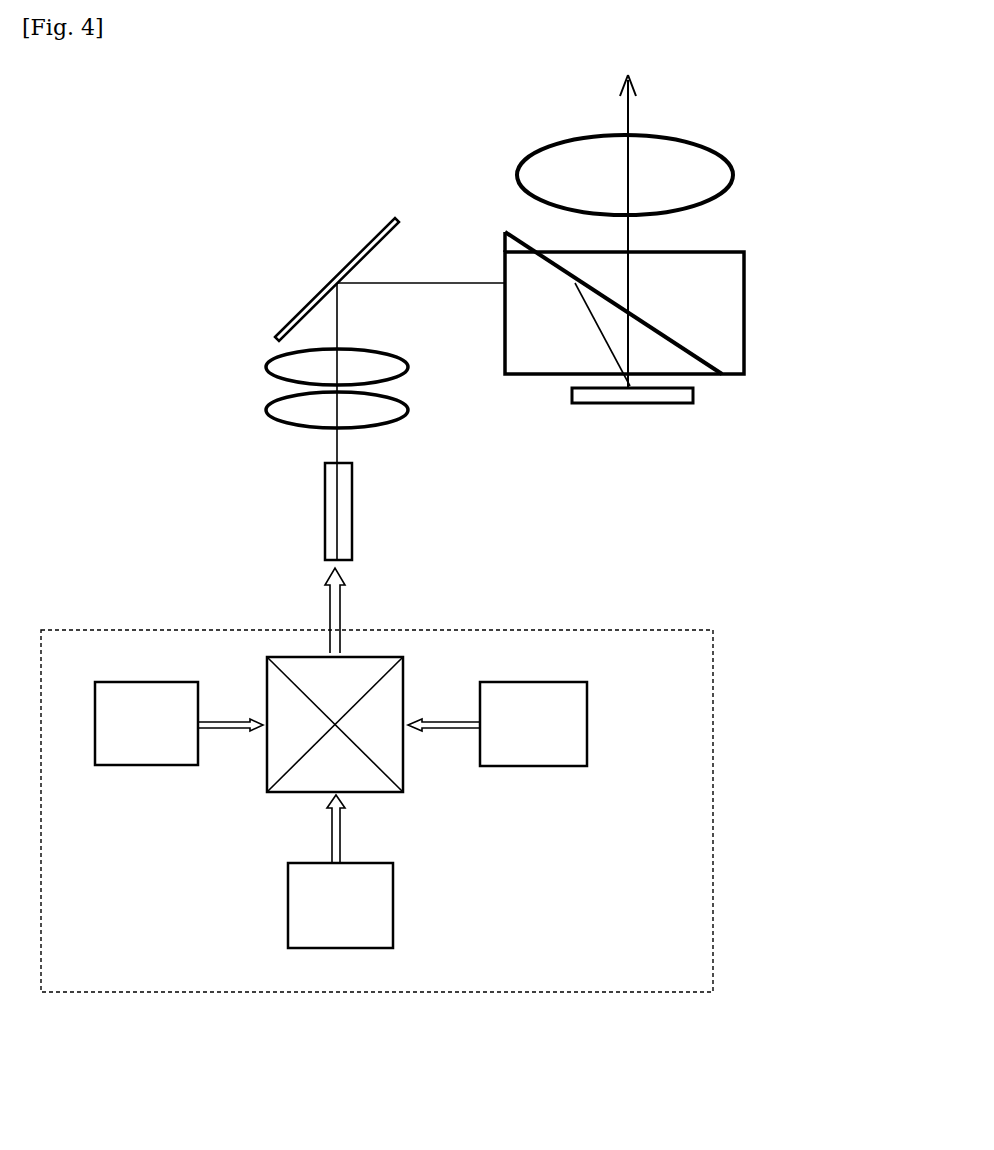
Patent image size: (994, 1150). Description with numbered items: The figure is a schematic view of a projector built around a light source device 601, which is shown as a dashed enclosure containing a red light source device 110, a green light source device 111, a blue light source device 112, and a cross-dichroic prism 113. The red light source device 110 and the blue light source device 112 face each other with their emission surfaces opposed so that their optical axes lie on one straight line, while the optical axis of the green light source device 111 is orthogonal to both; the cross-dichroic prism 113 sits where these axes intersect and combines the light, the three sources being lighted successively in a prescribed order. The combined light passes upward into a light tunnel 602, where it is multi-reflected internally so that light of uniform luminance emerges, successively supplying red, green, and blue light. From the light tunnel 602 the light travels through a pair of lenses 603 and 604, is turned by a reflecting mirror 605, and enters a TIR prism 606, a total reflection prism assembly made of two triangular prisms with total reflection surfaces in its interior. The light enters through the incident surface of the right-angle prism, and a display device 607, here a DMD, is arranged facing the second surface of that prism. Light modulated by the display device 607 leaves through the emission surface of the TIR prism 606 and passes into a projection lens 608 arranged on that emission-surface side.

The red light source device 110 is at (113, 745).
The green light source device 111 is at (393, 868).
The blue light source device 112 is at (575, 710).
The cross-dichroic prism 113 is at (285, 792).
The light source device 601 is at (713, 650).
The light tunnel 602 is at (347, 522).
The lens 603 is at (268, 410).
The lens 604 is at (268, 368).
The reflecting mirror 605 is at (399, 222).
The TIR prism 606 is at (744, 320).
The display device 607 is at (660, 401).
The projection lens 608 is at (733, 176).